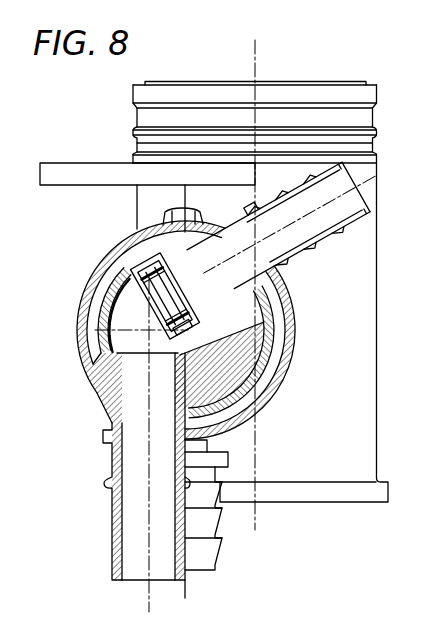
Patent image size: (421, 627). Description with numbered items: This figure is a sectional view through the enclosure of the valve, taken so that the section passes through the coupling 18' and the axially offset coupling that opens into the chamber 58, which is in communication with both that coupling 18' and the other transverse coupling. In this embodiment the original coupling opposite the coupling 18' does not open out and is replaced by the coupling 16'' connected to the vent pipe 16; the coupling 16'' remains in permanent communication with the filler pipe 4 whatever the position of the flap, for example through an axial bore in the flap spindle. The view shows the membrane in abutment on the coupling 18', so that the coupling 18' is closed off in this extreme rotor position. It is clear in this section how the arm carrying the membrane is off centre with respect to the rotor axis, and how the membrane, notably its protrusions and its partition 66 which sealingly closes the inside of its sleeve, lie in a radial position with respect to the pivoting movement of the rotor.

The filler pipe 4 is at (138, 204).
The chamber 58 is at (126, 308).
The partition 66 is at (183, 292).
The coupling 18' is at (301, 223).
The vent pipe 16 is at (130, 466).
The coupling 16'' is at (229, 519).